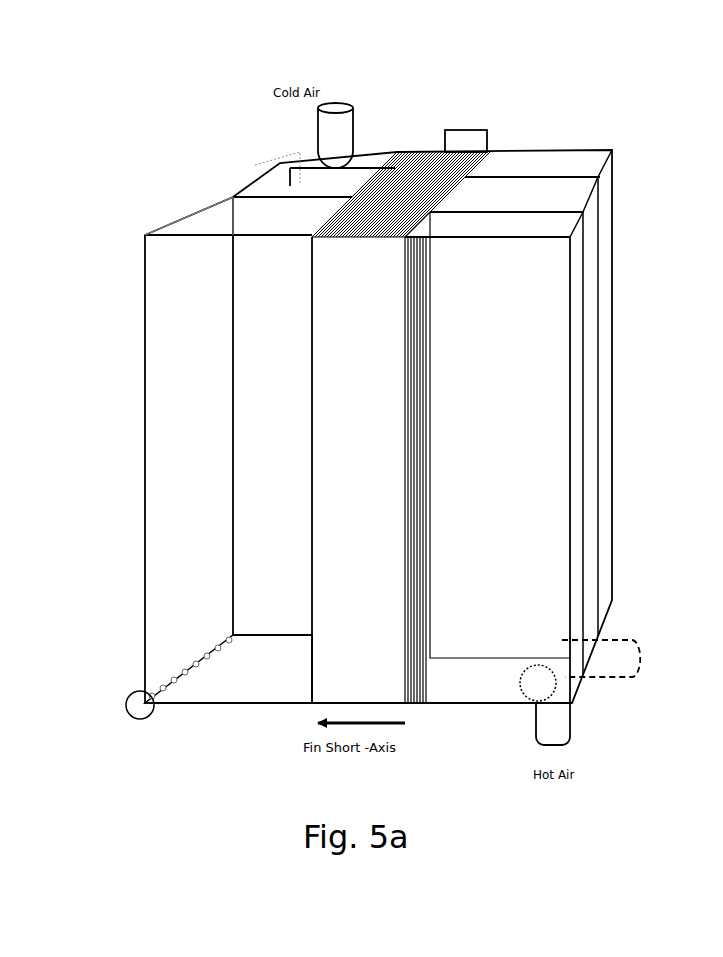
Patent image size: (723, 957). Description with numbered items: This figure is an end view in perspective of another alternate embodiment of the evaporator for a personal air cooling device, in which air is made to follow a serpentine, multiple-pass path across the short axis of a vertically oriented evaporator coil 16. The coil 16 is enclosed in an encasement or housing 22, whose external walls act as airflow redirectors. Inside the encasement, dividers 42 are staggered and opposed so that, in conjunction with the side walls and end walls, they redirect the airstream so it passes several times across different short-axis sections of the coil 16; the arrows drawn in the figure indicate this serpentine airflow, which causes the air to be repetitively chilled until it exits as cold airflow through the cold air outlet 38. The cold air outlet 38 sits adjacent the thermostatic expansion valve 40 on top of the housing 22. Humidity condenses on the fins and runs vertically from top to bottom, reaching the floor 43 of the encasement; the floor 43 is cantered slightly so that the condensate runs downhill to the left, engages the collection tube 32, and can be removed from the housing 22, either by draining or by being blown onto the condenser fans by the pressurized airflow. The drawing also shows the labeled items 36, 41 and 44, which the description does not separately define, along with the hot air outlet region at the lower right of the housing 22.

The evaporator coil 16 is at (427, 183).
The encasement or housing 22 is at (618, 201).
The collection tube 32 is at (146, 718).
The hot air outlet pipe 36 is at (572, 716).
The cold air outlet 38 is at (325, 140).
The thermostatic expansion valve 40 is at (487, 130).
The top plenum face 41 is at (190, 218).
The dividers 42 is at (290, 168).
The floor 43 is at (258, 672).
The housing walls 44 is at (175, 268).